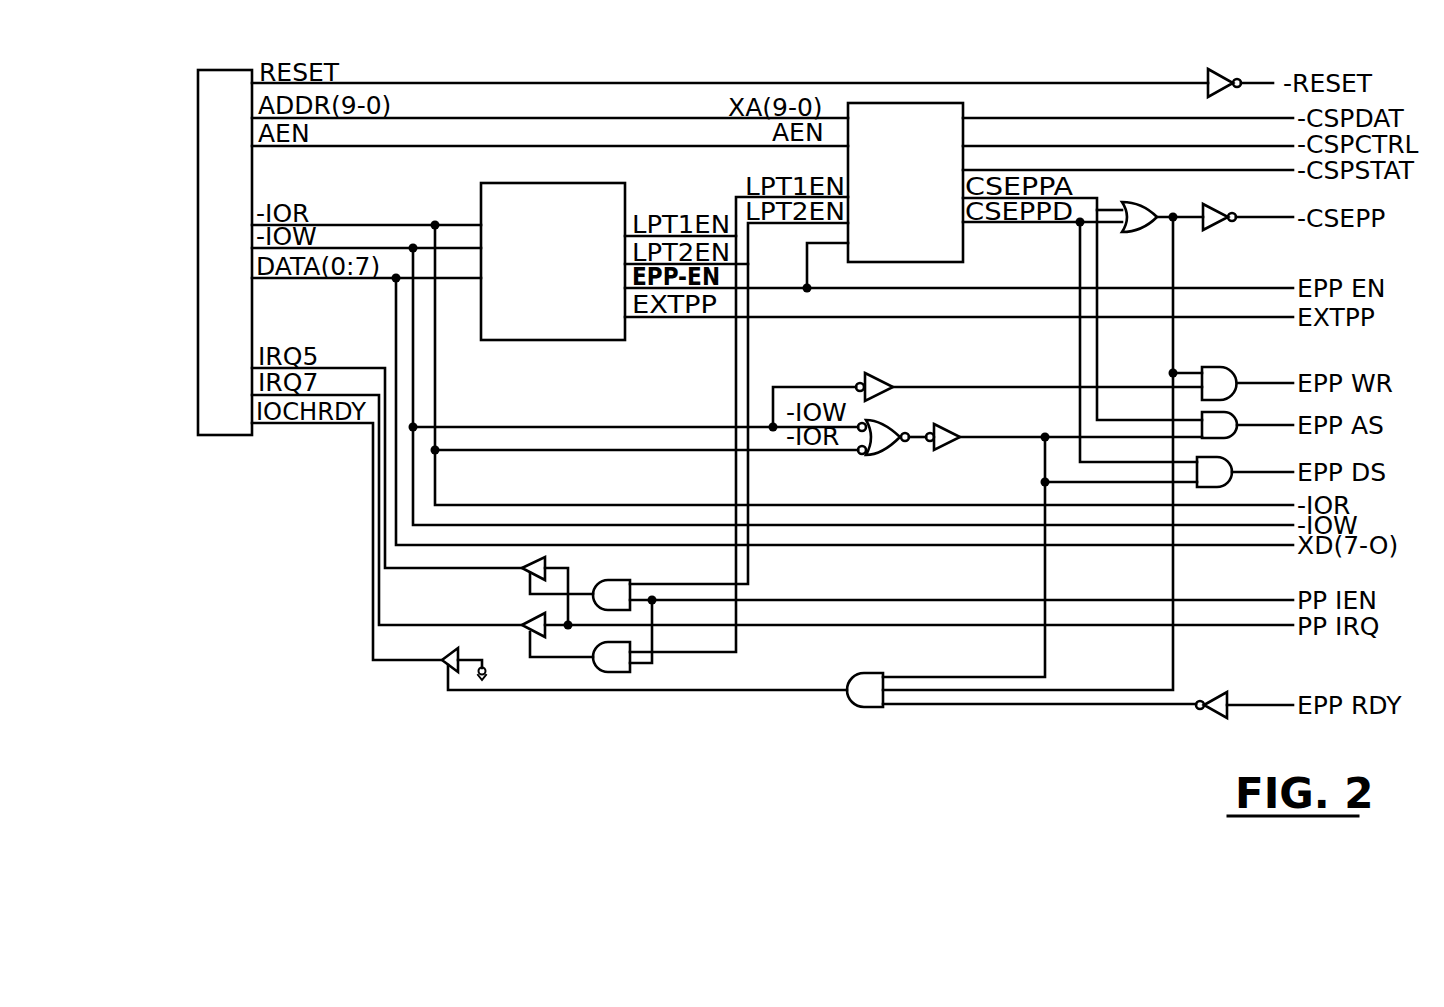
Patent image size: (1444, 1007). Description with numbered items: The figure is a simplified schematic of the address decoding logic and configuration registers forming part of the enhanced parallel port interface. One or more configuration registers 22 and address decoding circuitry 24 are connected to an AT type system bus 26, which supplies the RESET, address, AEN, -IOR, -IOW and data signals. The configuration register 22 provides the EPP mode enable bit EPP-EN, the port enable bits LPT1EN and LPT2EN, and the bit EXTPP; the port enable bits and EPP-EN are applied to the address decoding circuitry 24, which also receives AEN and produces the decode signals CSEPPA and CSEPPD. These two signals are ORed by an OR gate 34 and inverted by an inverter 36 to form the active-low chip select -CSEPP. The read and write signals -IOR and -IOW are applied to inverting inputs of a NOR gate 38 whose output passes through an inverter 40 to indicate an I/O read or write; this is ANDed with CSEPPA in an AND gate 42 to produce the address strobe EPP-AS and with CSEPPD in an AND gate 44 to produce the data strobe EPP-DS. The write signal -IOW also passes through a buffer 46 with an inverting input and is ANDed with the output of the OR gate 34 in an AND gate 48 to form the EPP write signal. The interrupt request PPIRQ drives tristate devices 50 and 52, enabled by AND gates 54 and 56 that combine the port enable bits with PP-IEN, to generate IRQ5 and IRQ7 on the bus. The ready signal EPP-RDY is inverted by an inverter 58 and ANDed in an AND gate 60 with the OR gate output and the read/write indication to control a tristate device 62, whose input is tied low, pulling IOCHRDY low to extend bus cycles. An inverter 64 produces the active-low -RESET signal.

The configuration register 22 is at (562, 197).
The address decoding circuitry 24 is at (943, 120).
The AT type system bus 26 is at (197, 286).
The OR gate 34 is at (1140, 207).
The inverter 36 is at (1218, 207).
The NOR gate 38 is at (888, 424).
The inverter 40 is at (952, 434).
The AND gate 42 is at (1228, 420).
The AND gate 44 is at (1222, 465).
The buffer 46 is at (878, 380).
The AND gate 48 is at (1228, 372).
The tristate device 50 is at (537, 565).
The tristate device 52 is at (525, 622).
The AND gate 54 is at (607, 588).
The AND gate 56 is at (607, 663).
The inverter 58 is at (1214, 710).
The AND gate 60 is at (864, 705).
The tristate device 62 is at (440, 660).
The inverter 64 is at (1222, 72).